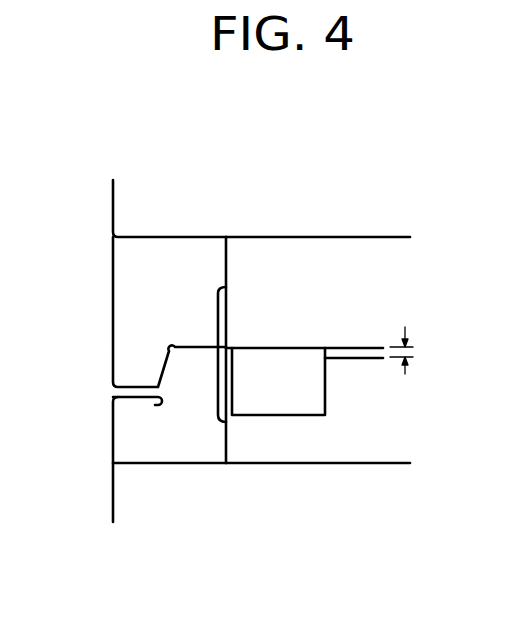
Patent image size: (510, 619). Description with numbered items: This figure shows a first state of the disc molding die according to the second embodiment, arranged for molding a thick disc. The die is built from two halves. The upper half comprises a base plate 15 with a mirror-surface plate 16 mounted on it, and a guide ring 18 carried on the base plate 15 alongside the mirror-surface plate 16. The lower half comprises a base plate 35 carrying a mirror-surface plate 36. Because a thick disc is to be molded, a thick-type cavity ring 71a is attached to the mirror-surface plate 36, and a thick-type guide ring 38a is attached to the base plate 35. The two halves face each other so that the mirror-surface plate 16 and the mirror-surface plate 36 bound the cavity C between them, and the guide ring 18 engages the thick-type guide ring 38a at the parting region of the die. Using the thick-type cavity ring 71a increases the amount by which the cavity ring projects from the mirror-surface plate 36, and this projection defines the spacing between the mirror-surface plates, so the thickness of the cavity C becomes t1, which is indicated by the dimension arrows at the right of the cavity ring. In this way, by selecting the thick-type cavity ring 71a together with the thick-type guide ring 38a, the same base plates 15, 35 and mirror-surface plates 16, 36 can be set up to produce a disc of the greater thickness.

The base plate 15 is at (128, 205).
The guide ring 18 is at (155, 268).
The mirror-surface plate 16 is at (352, 267).
The thick-type cavity ring 71a is at (272, 358).
The cavity C is at (363, 350).
The cavity thickness t1 is at (401, 366).
The thick-type guide ring 38a is at (163, 480).
The base plate 35 is at (132, 490).
The mirror-surface plate 36 is at (348, 445).